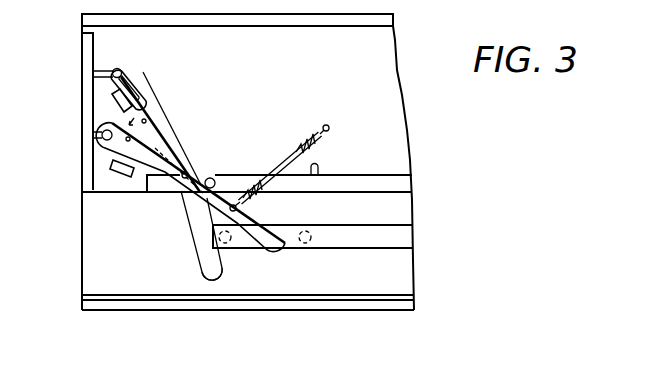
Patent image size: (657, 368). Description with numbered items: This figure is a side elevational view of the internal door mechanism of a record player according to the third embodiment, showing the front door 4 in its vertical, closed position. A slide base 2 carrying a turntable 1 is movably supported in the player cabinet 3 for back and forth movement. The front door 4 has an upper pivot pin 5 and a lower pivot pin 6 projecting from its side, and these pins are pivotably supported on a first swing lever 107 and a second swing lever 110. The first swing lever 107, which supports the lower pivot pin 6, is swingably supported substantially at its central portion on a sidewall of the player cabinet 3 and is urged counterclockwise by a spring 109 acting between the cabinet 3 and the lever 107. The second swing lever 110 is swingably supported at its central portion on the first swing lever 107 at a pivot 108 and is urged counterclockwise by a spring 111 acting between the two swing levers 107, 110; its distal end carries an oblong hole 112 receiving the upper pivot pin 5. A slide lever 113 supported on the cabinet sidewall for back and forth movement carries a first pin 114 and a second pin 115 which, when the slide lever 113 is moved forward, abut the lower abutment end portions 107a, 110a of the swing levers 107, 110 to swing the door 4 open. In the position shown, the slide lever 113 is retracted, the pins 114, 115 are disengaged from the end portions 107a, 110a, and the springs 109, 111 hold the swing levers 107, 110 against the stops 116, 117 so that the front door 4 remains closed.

The turntable 1 is at (398, 183).
The slide base 2 is at (398, 208).
The player cabinet 3 is at (394, 22).
The front door 4 is at (89, 82).
The upper pivot pin 5 is at (113, 70).
The lower pivot pin 6 is at (100, 137).
The first swing lever 107 is at (120, 150).
The lower abutment end portion 107a is at (290, 262).
The pivot 108 is at (211, 178).
The spring 109 is at (290, 153).
The second swing lever 110 is at (170, 140).
The lower abutment end portion 110a is at (207, 262).
The spring 111 is at (153, 125).
The oblong hole 112 is at (135, 88).
The slide lever 113 is at (405, 237).
The first pin 114 is at (307, 244).
The second pin 115 is at (229, 244).
The stop 116 is at (117, 173).
The stop 117 is at (113, 101).